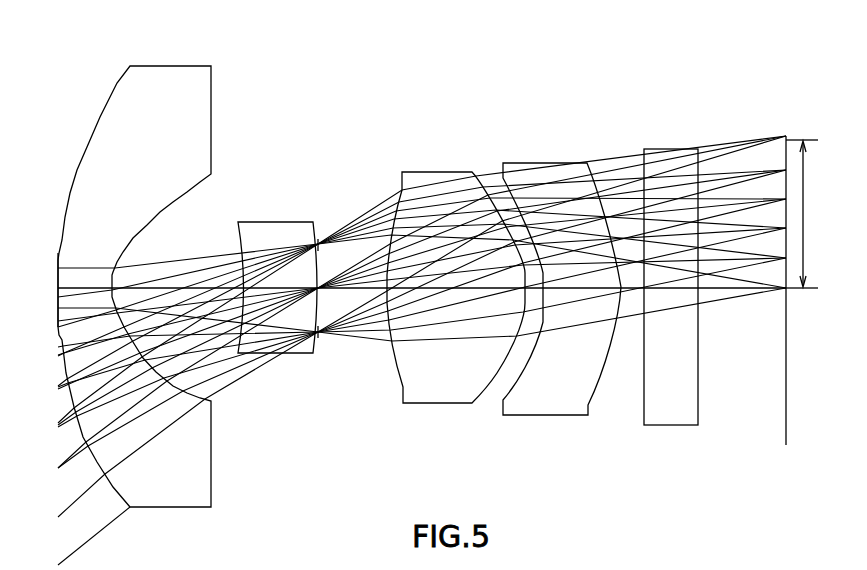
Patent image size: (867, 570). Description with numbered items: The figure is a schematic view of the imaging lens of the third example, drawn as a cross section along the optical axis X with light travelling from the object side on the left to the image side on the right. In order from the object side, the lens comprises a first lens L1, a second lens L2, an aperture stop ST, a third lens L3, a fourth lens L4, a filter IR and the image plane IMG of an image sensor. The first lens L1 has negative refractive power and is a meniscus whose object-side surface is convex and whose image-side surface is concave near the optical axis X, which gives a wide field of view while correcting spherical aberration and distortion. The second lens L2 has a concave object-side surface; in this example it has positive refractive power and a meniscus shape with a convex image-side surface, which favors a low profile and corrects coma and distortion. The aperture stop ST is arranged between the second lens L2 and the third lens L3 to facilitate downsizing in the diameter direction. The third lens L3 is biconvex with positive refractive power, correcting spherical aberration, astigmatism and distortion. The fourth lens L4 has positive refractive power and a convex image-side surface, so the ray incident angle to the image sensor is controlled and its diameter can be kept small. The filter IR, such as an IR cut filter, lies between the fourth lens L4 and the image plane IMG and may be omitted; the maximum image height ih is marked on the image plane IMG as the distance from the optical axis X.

The first lens L1 is at (190, 66).
The second lens L2 is at (302, 222).
The third lens L3 is at (437, 172).
The fourth lens L4 is at (543, 163).
The aperture stop ST is at (320, 338).
The filter IR is at (654, 149).
The image plane IMG is at (786, 410).
The optical axis X is at (78, 288).
The maximum image height ih is at (807, 214).